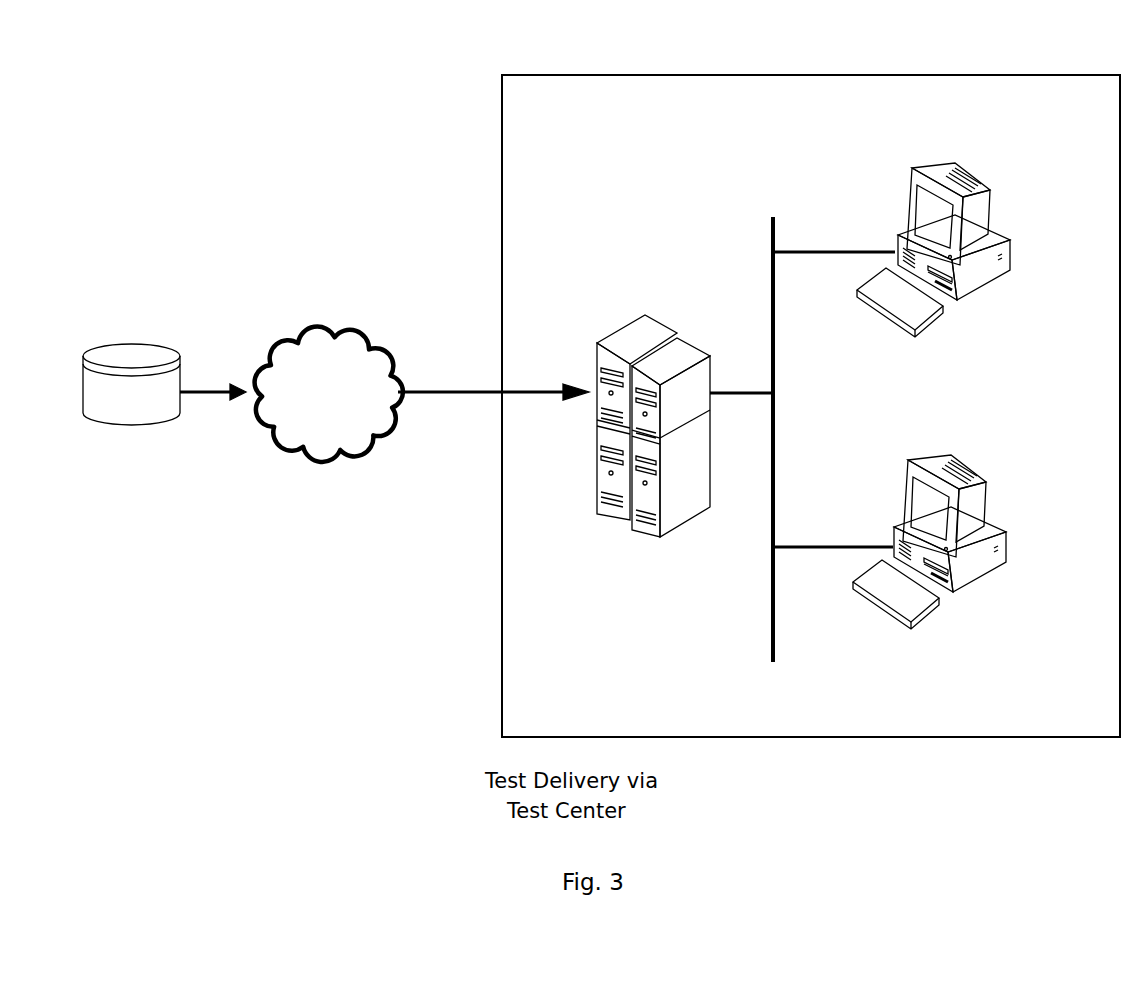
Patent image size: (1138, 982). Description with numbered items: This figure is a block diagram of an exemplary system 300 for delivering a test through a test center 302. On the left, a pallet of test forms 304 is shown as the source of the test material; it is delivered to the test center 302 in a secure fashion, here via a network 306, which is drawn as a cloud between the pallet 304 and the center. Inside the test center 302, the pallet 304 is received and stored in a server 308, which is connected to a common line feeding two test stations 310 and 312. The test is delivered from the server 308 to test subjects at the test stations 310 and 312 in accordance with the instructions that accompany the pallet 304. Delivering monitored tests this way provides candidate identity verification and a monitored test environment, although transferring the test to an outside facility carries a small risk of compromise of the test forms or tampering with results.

The system 300 is at (606, 46).
The test center 302 is at (880, 742).
The pallet of test forms 304 is at (135, 340).
The network 306 is at (328, 322).
The server 308 is at (663, 322).
The test station 310 is at (990, 573).
The test station 312 is at (940, 162).